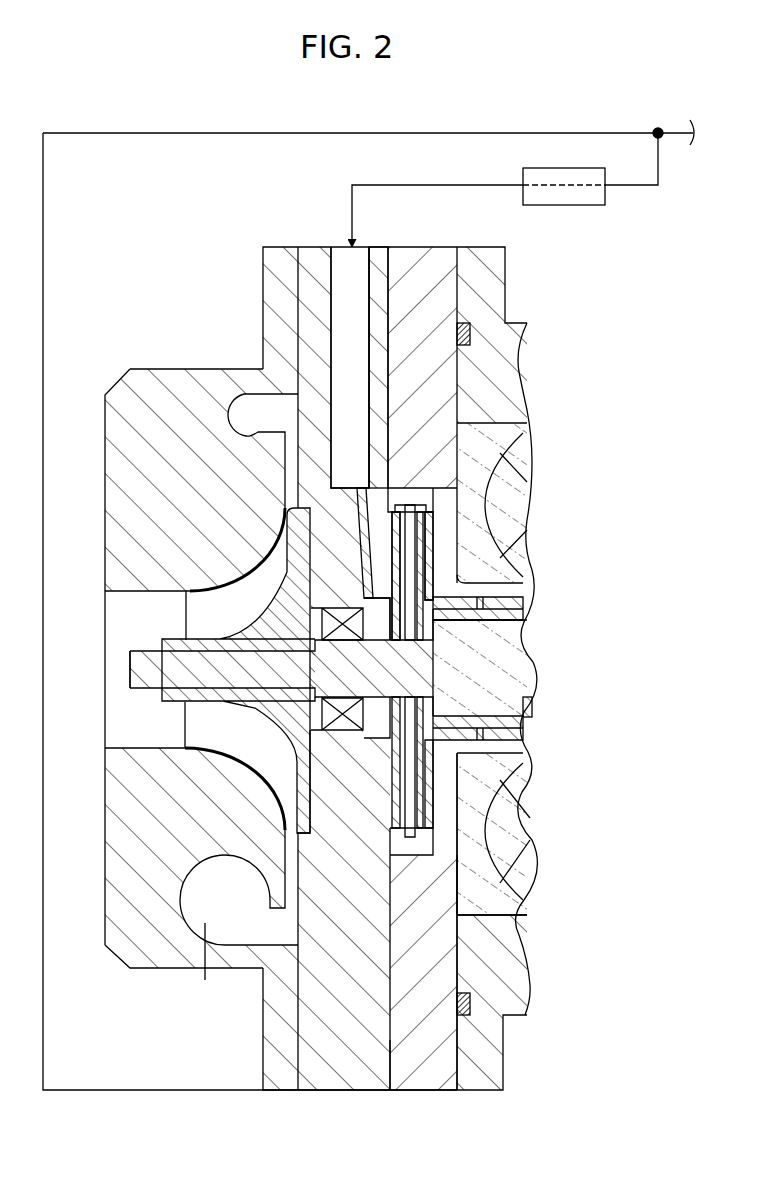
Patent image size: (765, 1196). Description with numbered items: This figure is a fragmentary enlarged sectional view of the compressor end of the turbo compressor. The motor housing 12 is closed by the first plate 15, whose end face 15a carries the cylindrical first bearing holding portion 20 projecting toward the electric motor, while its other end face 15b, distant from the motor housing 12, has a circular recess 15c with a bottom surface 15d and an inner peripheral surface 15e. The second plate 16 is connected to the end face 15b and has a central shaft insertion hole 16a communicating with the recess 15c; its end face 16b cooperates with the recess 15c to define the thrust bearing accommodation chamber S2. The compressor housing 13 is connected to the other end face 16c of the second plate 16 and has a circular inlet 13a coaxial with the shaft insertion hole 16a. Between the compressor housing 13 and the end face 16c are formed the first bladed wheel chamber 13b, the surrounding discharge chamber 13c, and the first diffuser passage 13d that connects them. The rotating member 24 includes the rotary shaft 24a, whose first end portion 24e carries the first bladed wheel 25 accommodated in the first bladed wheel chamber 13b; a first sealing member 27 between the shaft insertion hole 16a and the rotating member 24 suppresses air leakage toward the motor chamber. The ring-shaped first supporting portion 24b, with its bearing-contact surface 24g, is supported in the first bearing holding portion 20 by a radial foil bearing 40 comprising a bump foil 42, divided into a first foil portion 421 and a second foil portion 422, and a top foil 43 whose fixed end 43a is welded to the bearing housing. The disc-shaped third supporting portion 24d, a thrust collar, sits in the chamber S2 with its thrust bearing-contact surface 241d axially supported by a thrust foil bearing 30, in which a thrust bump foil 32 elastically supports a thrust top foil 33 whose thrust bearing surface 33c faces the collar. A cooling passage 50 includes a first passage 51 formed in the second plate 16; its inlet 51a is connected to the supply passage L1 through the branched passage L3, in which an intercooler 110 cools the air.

The supply passage L1 is at (368, 133).
The branched passage L3 is at (640, 188).
The intercooler 110 is at (570, 205).
The motor housing 12 is at (486, 262).
The compressor housing 13 is at (158, 382).
The inlet 13a is at (118, 600).
The first bladed wheel chamber 13b is at (243, 615).
The discharge chamber 13c is at (244, 909).
The first diffuser passage 13d is at (288, 860).
The first plate 15 is at (414, 262).
The end face 15a is at (470, 1035).
The end face 15b is at (392, 1042).
The recess 15c is at (400, 488).
The bottom surface 15d is at (432, 852).
The inner peripheral surface 15e is at (392, 838).
The second plate 16 is at (316, 256).
The shaft insertion hole 16a is at (372, 742).
The end face 16b is at (400, 1040).
The end face 16c is at (298, 1030).
The first bearing holding portion 20 is at (520, 748).
The rotating member 24 is at (530, 652).
The rotary shaft 24a is at (510, 664).
The first supporting portion 24b is at (534, 707).
The third supporting portion 24d is at (420, 642).
The first end portion 24e is at (130, 669).
The bearing-contact surface 24g is at (532, 760).
The first bladed wheel 25 is at (230, 700).
The first sealing member 27 is at (344, 642).
The thrust foil bearing 30 is at (388, 800).
The thrust bump foil 32 is at (362, 520).
The thrust top foil 33 is at (395, 500).
The thrust bearing surface 33c is at (385, 574).
The radial foil bearing 40 is at (492, 592).
The bump foil 42 is at (512, 597).
The first foil portion 421 is at (500, 605).
The second foil portion 422 is at (484, 596).
The top foil 43 is at (525, 614).
The fixed end 43a is at (474, 622).
The cooling passage 50 is at (342, 245).
The first passage 51 is at (330, 288).
The inlet 51a is at (370, 262).
The thrust bearing-contact surface 241d is at (528, 827).
The thrust bearing accommodation chamber S2 is at (526, 436).